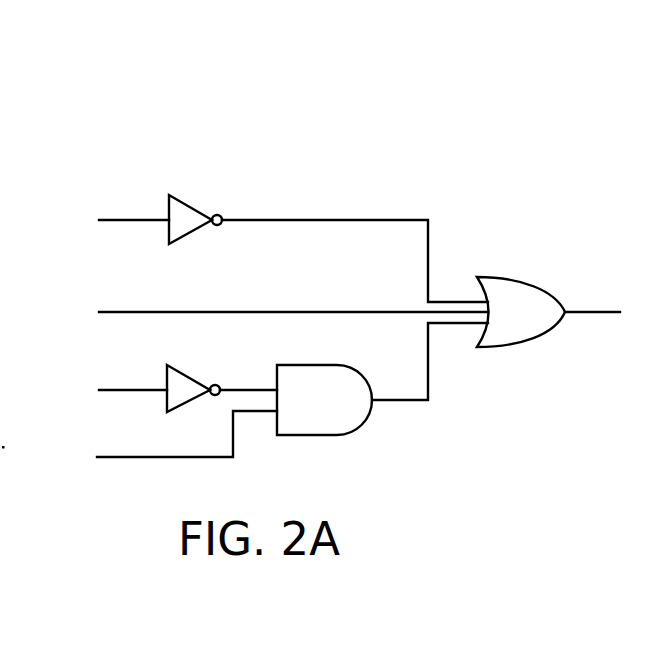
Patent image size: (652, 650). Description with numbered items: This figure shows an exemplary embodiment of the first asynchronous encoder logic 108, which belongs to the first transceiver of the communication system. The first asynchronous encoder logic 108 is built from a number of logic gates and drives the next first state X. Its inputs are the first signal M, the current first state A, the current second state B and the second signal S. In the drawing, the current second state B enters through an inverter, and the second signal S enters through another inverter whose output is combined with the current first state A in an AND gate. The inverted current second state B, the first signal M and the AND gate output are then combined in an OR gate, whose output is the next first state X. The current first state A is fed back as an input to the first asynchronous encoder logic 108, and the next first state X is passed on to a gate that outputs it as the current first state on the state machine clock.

The first asynchronous encoder logic 108 is at (273, 159).
The current second state B is at (134, 202).
The first signal M is at (292, 293).
The second signal S is at (133, 374).
The current first state A is at (187, 434).
The next first state X is at (594, 297).